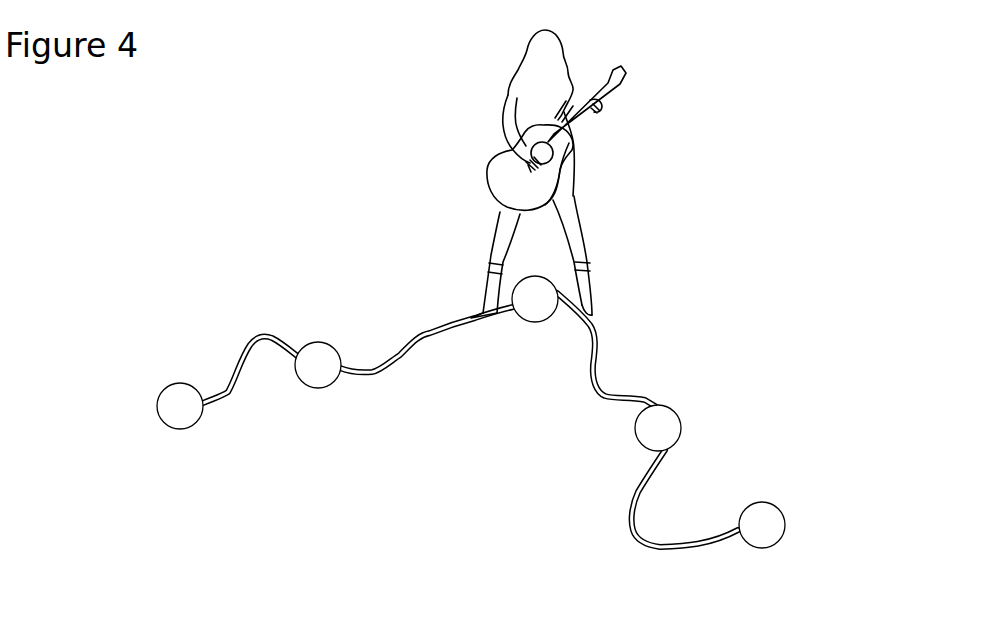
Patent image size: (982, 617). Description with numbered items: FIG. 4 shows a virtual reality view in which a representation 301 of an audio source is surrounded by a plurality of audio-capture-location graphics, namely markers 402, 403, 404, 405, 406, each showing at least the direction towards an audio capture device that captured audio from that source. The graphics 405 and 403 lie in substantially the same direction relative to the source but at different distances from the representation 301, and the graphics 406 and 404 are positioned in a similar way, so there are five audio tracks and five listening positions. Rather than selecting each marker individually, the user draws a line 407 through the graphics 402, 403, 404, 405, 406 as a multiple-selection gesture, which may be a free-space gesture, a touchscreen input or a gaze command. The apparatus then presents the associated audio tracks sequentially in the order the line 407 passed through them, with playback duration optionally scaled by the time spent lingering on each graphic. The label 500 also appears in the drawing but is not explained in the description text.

The performer 301 is at (544, 50).
The sensor node 402 is at (535, 301).
The sensor node 403 is at (179, 407).
The sensor node 404 is at (763, 525).
The sensor node 405 is at (318, 366).
The sensor node 406 is at (658, 428).
The cable 407 is at (243, 382).
The stage 500 is at (251, 609).